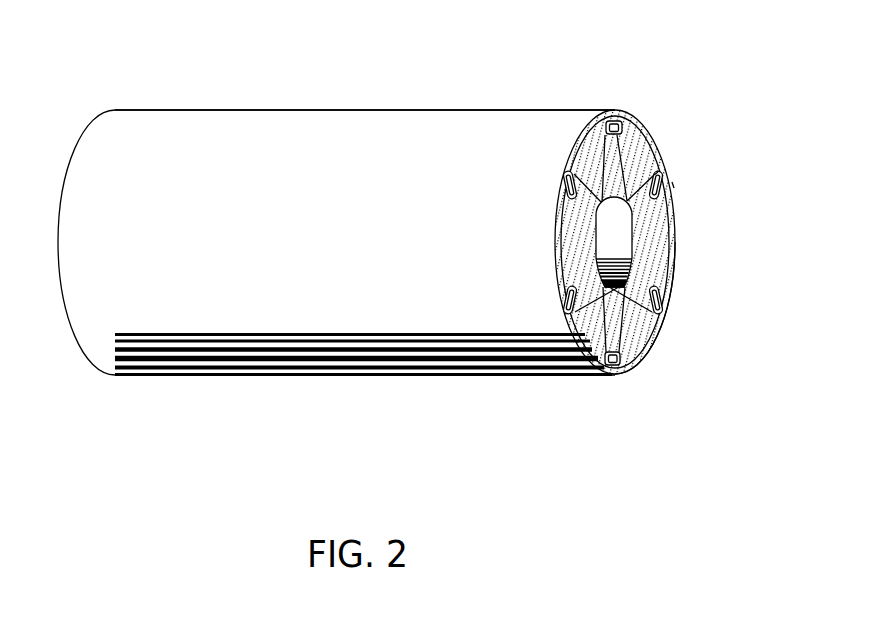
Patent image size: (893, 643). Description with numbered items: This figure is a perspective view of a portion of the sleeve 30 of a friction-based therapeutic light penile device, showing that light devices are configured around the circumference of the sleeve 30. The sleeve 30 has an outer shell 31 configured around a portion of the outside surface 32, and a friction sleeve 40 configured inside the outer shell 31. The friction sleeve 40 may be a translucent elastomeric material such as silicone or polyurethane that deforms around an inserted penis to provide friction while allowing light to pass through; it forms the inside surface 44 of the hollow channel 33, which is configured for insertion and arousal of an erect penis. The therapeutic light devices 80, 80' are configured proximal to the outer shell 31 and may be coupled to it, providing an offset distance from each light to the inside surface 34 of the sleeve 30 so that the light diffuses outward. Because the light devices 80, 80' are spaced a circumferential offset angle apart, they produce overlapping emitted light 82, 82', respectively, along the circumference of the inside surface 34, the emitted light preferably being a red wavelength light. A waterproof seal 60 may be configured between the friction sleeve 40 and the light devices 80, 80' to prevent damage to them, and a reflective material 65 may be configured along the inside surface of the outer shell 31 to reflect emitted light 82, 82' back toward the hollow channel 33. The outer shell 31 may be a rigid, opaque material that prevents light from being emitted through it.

The sleeve 30 is at (299, 122).
The outer shell 31 is at (381, 124).
The outside surface 32 is at (197, 97).
The hollow channel 33 is at (610, 232).
The inside surface 34 is at (663, 285).
The friction sleeve 40 is at (636, 160).
The inside surface 44 is at (634, 258).
The waterproof seal 60 is at (645, 346).
The reflective material 65 is at (663, 322).
The therapeutic light device 80 is at (636, 185).
The therapeutic light device 80' is at (712, 156).
The emitted light 82 is at (607, 84).
The emitted light 82' is at (691, 140).